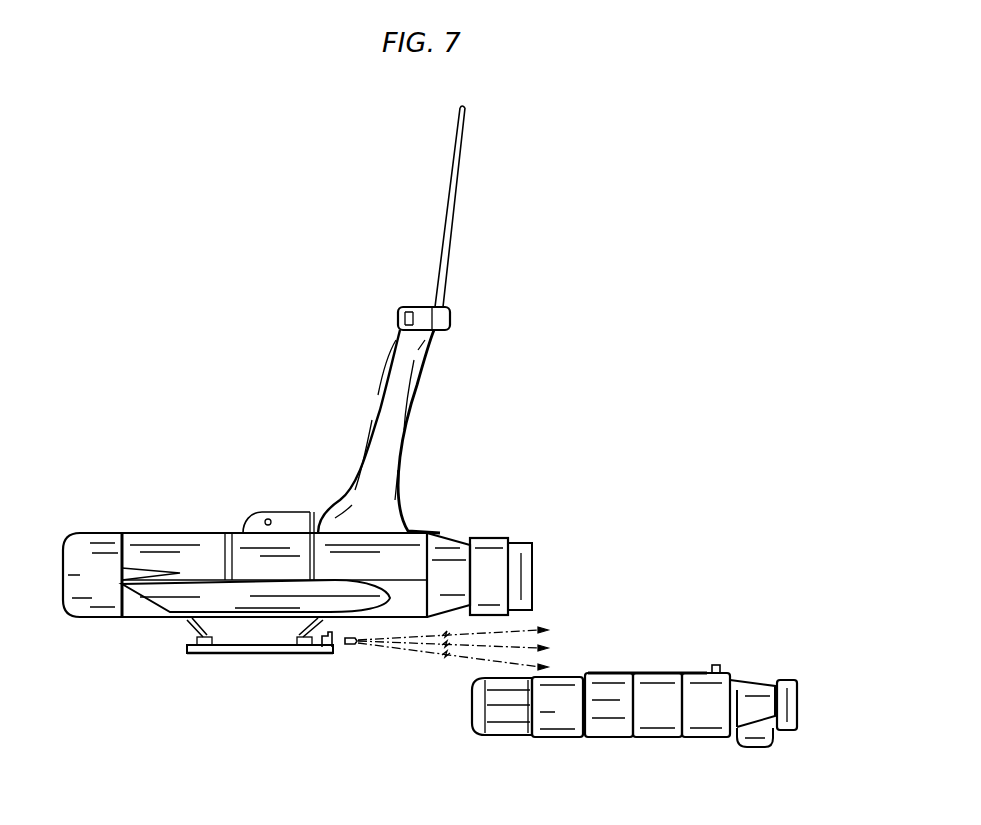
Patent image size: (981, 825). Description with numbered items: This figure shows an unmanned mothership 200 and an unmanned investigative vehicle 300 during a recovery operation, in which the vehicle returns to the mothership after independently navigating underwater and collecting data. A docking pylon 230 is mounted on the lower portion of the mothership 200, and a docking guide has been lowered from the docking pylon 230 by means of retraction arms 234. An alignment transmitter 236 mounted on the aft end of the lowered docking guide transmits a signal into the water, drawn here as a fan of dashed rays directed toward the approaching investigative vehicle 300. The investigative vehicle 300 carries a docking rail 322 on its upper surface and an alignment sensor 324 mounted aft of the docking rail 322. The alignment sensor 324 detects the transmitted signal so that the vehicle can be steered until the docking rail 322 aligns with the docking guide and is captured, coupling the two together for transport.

The unmanned mothership 200 is at (158, 350).
The docking pylon 230 is at (200, 580).
The retraction arms 234 is at (188, 625).
The alignment transmitter 236 is at (323, 648).
The unmanned investigative vehicle 300 is at (722, 585).
The docking rail 322 is at (640, 672).
The alignment sensor 324 is at (714, 665).